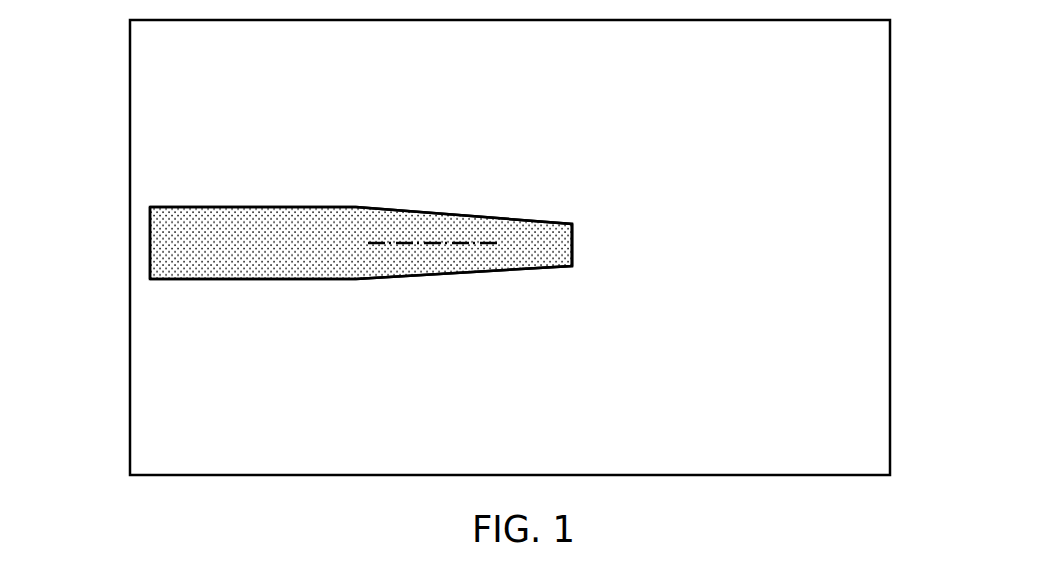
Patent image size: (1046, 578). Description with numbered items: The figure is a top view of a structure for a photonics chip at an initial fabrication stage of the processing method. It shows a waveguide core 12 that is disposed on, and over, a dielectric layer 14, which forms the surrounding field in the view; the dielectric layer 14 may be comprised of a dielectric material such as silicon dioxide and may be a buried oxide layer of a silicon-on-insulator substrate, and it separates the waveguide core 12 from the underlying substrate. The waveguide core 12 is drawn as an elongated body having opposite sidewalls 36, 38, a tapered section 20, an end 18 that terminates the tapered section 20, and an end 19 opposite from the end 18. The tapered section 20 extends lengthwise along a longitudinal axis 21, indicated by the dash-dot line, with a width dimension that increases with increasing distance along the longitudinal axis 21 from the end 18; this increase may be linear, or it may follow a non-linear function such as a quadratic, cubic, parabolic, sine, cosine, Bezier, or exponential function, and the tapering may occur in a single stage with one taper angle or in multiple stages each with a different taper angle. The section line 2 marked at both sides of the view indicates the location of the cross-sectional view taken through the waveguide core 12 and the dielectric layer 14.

The section line 2- 2 is at (75, 248).
The waveguide core 12 is at (558, 175).
The dielectric layer 14 is at (198, 390).
The end 18 is at (573, 244).
The end 19 is at (150, 257).
The tapered section 20 is at (430, 262).
The longitudinal axis 21 is at (447, 243).
The sidewall 36 is at (258, 207).
The sidewall 38 is at (298, 280).